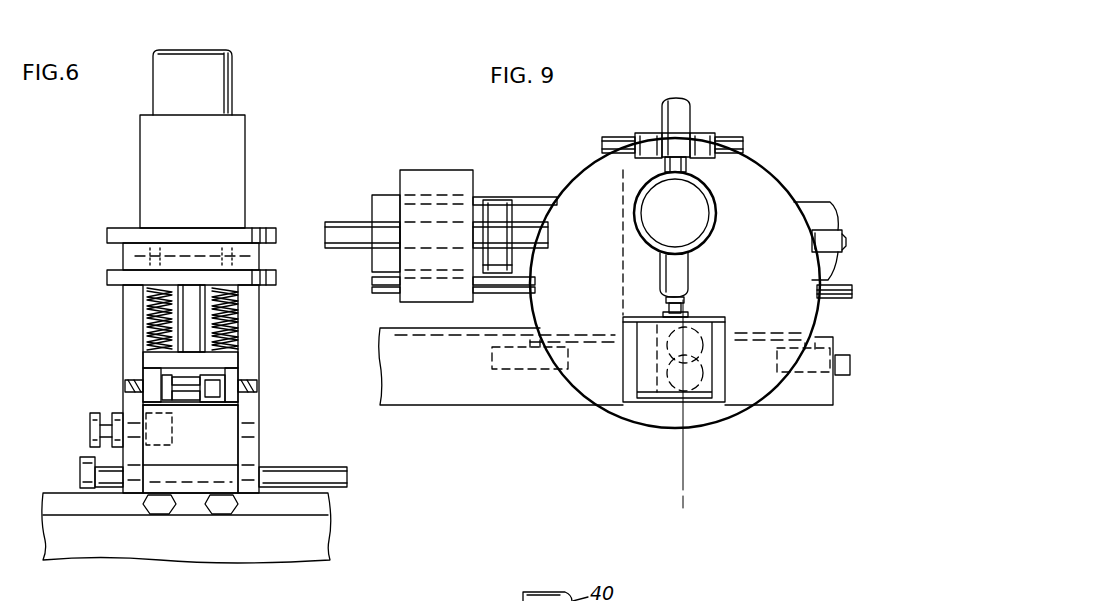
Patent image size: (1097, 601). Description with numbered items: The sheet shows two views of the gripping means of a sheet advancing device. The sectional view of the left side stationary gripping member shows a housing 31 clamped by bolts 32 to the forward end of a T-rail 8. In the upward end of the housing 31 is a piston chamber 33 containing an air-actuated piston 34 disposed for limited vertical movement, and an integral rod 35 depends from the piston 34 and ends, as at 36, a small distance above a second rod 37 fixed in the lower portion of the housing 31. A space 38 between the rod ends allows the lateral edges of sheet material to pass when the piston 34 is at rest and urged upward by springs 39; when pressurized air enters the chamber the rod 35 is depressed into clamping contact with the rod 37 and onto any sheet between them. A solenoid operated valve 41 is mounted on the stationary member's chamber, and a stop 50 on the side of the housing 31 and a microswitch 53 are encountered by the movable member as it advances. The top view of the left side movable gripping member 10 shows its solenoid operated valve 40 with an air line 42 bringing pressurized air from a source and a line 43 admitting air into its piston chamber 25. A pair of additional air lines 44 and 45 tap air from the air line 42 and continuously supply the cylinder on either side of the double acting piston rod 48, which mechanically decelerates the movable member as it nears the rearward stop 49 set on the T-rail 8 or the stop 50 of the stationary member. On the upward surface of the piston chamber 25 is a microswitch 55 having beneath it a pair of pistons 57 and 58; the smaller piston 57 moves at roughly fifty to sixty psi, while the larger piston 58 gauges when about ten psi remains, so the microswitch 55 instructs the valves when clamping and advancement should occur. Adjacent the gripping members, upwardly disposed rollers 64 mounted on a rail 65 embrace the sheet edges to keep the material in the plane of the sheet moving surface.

In FIG. 6, the T-rail 8 is at (330, 498).
In FIG. 9, the T-rail 8 is at (383, 198).
In FIG. 9, the movable gripping member 10 is at (615, 222).
In FIG. 9, the piston chamber 25 is at (782, 189).
In FIG. 6, the housing 31 is at (257, 350).
In FIG. 6, the bolts 32 is at (218, 512).
In FIG. 6, the piston chamber 33 is at (123, 246).
In FIG. 6, the piston 34 is at (226, 250).
In FIG. 6, the rod 35 is at (183, 318).
In FIG. 6, the rod end 36 is at (185, 376).
In FIG. 6, the second rod 37 is at (185, 401).
In FIG. 6, the space 38 is at (198, 385).
In FIG. 6, the springs 39 is at (150, 302).
In FIG. 9, the solenoid operated valve 40 is at (712, 198).
In FIG. 6, the solenoid operated valve 41 is at (233, 54).
In FIG. 9, the air line 42 is at (688, 103).
In FIG. 9, the air line 43 is at (690, 273).
In FIG. 9, the air line 44 is at (615, 137).
In FIG. 9, the air line 45 is at (730, 137).
In FIG. 9, the double acting piston rod 48 is at (513, 222).
In FIG. 9, the rearward stop 49 is at (473, 172).
In FIG. 6, the stop 50 is at (90, 421).
In FIG. 6, the microswitch 53 is at (80, 471).
In FIG. 6, the microswitch 55 is at (248, 137).
In FIG. 9, the microswitch 55 is at (720, 319).
In FIG. 9, the piston 57 is at (700, 341).
In FIG. 9, the piston 58 is at (700, 376).
In FIG. 9, the rollers 64 is at (492, 370).
In FIG. 9, the rail 65 is at (486, 402).